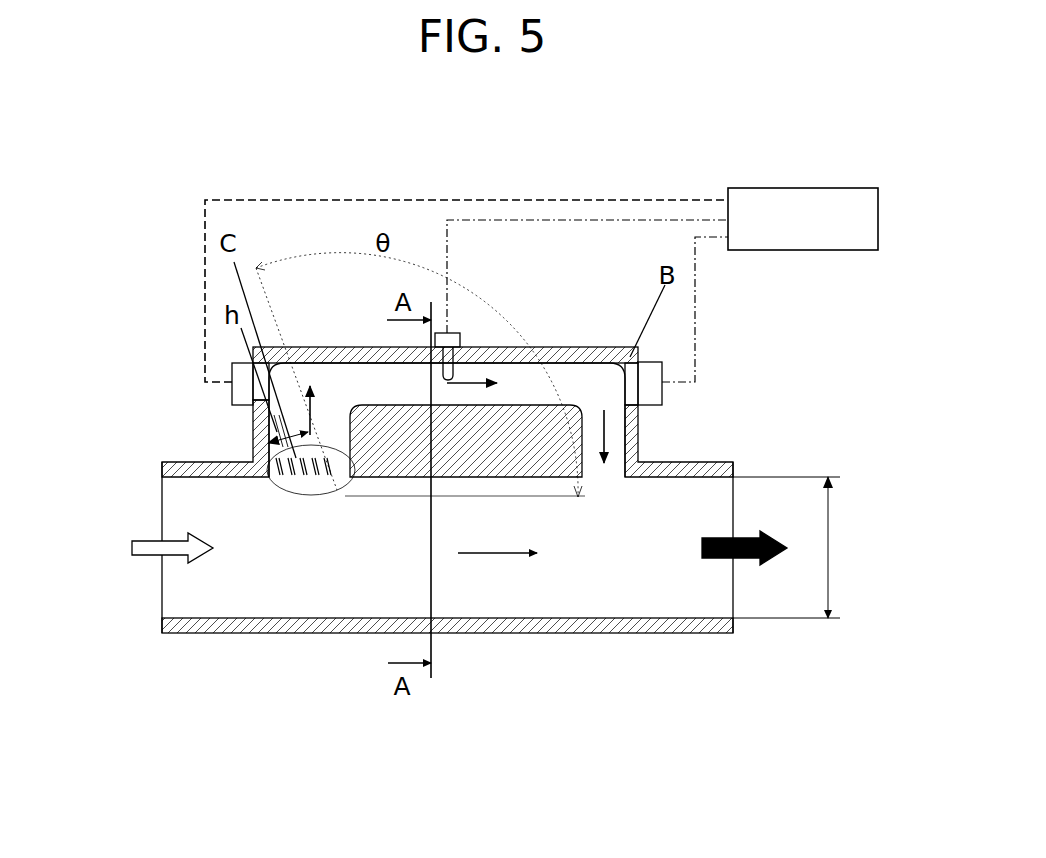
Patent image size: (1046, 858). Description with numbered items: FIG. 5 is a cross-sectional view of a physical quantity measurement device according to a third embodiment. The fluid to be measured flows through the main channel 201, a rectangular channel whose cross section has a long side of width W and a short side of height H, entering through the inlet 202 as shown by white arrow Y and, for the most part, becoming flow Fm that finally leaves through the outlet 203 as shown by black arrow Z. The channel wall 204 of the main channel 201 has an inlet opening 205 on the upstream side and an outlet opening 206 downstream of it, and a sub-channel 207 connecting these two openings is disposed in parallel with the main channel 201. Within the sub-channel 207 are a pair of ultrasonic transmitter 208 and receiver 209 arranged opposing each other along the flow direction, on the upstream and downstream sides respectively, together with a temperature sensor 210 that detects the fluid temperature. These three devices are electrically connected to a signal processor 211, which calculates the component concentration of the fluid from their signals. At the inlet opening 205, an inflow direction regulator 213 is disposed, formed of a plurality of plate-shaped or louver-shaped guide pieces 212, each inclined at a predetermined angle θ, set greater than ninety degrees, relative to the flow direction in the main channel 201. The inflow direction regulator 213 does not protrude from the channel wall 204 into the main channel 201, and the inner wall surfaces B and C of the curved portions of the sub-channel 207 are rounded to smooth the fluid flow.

The main channel 201 is at (275, 598).
The inlet 202 is at (170, 580).
The outlet 203 is at (723, 585).
The channel wall 204 is at (187, 475).
The inlet opening 205 is at (302, 482).
The outlet opening 206 is at (603, 472).
The sub-channel 207 is at (372, 383).
The ultrasonic transmitter 208 is at (232, 400).
The receiver 209 is at (652, 392).
The temperature sensor 210 is at (448, 340).
The signal processor 211 is at (820, 187).
The guide piece 212 is at (282, 480).
The inflow direction regulator 213 is at (328, 495).